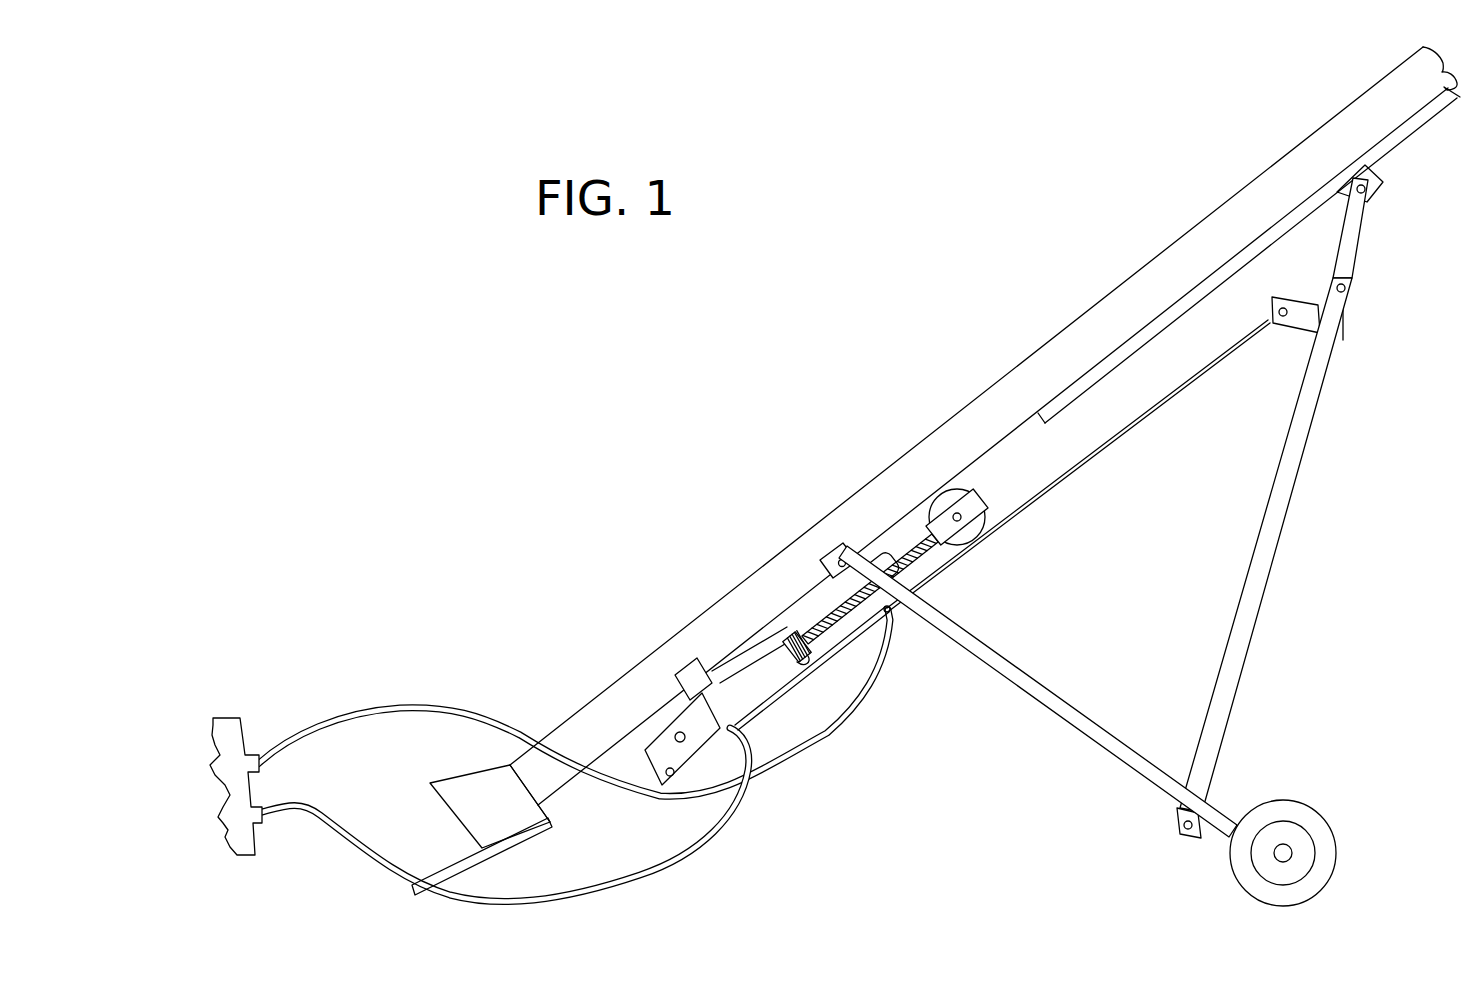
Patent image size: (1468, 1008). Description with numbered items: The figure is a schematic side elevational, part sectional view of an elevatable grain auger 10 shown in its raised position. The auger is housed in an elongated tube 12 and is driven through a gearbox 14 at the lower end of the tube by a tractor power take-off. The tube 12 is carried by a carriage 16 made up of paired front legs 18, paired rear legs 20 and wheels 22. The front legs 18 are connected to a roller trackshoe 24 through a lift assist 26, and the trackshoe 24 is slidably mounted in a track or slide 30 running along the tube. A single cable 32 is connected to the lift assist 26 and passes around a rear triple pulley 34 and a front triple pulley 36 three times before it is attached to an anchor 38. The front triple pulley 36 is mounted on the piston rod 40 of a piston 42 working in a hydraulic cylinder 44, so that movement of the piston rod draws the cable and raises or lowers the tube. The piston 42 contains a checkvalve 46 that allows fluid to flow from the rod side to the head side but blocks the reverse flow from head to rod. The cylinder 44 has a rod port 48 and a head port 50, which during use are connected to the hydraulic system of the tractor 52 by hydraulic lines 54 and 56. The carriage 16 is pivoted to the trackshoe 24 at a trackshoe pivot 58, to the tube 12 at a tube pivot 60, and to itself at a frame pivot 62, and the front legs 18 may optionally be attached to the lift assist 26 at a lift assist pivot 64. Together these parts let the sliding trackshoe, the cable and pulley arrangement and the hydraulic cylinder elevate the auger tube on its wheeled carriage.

The elevatable grain auger 10 is at (1010, 328).
The elongated tube 12 is at (932, 434).
The gearbox 14 is at (463, 798).
The carriage 16 is at (1068, 677).
The front legs 18 is at (1253, 628).
The rear legs 20 is at (1062, 720).
The wheels 22 is at (1300, 813).
The roller trackshoe 24 is at (1372, 170).
The lift assist 26 is at (1355, 233).
The track or slide 30 is at (1133, 345).
The single cable 32 is at (1117, 443).
The rear triple pulley 34 is at (645, 742).
The front triple pulley 36 is at (987, 523).
The anchor 38 is at (665, 776).
The piston rod 40 is at (922, 566).
The piston 42 is at (815, 645).
The hydraulic cylinder 44 is at (732, 680).
The checkvalve 46 is at (803, 662).
The rod port 48 is at (889, 615).
The head port 50 is at (733, 726).
The tractor 52 is at (224, 810).
The hydraulic line 54 is at (328, 732).
The hydraulic line 56 is at (325, 826).
The trackshoe pivot 58 is at (1366, 191).
The tube pivot 60 is at (830, 543).
The frame pivot 62 is at (1178, 824).
The lift assist pivot 64 is at (1346, 290).